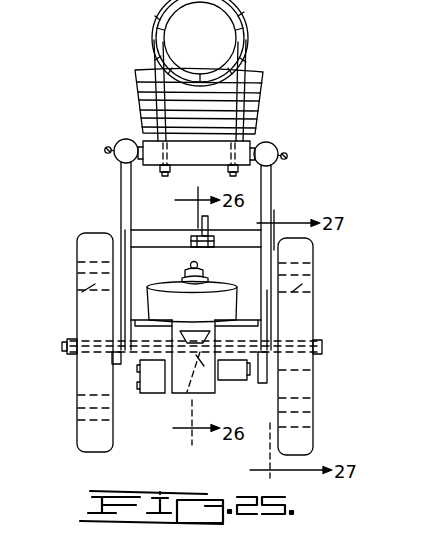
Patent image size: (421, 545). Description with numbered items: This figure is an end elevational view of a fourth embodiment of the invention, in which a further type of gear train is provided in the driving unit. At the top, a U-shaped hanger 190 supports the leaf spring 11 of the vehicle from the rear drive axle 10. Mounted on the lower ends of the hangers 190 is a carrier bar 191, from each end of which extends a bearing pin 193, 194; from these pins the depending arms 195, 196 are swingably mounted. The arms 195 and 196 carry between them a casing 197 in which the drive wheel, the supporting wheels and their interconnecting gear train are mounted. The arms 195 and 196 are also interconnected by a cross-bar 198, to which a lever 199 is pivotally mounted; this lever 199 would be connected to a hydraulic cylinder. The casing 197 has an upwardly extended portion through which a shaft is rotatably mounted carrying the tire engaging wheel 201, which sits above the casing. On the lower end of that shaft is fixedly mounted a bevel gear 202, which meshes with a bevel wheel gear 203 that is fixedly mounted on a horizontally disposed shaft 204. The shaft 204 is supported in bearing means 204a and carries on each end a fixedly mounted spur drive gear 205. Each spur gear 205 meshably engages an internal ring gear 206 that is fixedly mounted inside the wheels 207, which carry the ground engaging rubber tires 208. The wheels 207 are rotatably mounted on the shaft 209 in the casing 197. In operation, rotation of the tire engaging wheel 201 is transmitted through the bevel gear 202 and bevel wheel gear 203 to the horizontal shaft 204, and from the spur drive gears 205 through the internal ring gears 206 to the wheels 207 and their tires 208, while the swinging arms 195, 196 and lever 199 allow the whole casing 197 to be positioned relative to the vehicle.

The rear drive axle 10 is at (220, 37).
The U-shaped hanger 190 is at (243, 58).
The leaf spring 11 is at (258, 97).
The carrier bar 191 is at (252, 143).
The bearing pin 193 is at (105, 150).
The bearing pin 194 is at (287, 156).
The depending arm 195 is at (121, 190).
The depending arm 196 is at (272, 208).
The cross-bar 198 is at (174, 243).
The lever 199 is at (210, 223).
The tire engaging wheel 201 is at (212, 287).
The bevel gear 202 is at (188, 328).
The bevel wheel gear 203 is at (152, 362).
The horizontally disposed shaft 204 is at (127, 407).
The bearing means 204a is at (313, 371).
The casing 197 is at (230, 367).
The spur drive gear 205 is at (83, 357).
The internal ring gear 206 is at (77, 300).
The wheels 207 is at (315, 270).
The ground engaging rubber tires 208 is at (303, 428).
The shaft 209 is at (108, 336).